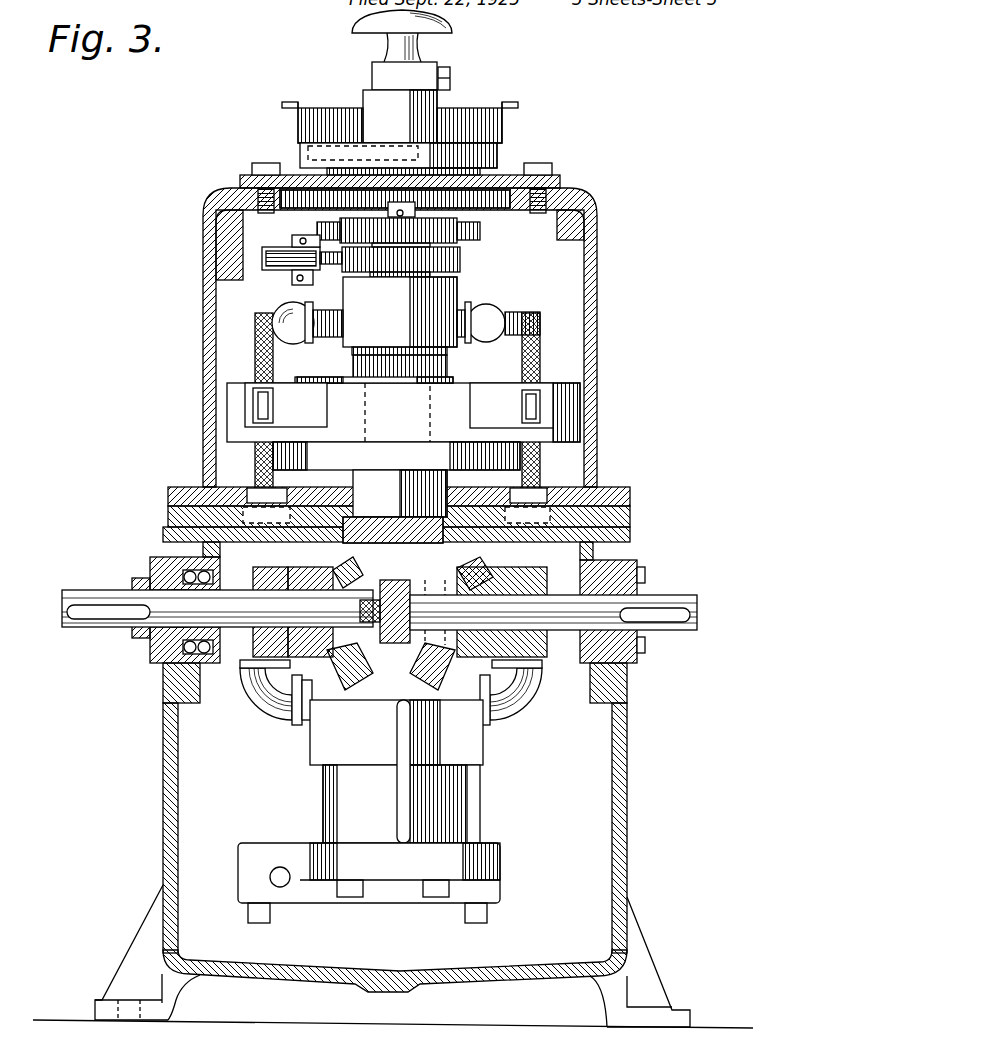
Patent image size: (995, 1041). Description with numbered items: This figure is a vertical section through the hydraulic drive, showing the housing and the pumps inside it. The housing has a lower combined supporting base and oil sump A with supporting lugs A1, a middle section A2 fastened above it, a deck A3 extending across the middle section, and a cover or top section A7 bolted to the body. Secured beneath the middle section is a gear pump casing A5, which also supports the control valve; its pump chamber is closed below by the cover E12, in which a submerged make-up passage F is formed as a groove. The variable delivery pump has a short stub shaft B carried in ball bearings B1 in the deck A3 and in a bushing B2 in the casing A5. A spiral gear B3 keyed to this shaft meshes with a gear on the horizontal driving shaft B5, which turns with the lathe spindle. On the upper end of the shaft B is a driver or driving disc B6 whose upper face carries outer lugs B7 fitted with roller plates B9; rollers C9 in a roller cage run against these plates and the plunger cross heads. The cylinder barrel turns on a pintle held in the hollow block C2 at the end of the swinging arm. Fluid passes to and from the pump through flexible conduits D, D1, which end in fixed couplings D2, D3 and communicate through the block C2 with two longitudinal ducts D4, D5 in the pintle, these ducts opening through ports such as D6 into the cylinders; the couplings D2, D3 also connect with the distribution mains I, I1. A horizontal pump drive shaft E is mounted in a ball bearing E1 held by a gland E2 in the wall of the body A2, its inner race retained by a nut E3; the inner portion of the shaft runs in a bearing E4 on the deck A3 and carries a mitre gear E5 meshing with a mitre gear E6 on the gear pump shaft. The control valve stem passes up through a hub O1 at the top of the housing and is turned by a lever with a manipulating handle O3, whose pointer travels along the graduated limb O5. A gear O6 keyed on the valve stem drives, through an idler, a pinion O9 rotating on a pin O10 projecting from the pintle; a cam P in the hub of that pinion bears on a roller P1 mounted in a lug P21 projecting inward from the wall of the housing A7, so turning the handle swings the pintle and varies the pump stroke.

The lower combined supporting base and oil sump A is at (500, 176).
The supporting lugs A1 is at (108, 1008).
The middle section A2 is at (200, 540).
The deck A3 is at (215, 533).
The gear pump casing A5 is at (328, 815).
The cover or top section A7 is at (207, 334).
The short stub shaft B is at (416, 589).
The ball bearings B1 is at (377, 531).
The bushing B2 is at (393, 645).
The spiral gear B3 is at (360, 594).
The horizontal driving shaft B5 is at (657, 604).
The driver or driving disc B6 is at (565, 441).
The outer lugs B7 is at (243, 415).
The roller paths or plates B9 is at (247, 395).
The hollow block C2 is at (400, 328).
The rollers C9 is at (275, 401).
The flexible conduit D is at (262, 458).
The flexible conduit D1 is at (545, 482).
The fixed coupling D2 is at (252, 497).
The fixed coupling D3 is at (550, 496).
The duct D4 is at (462, 306).
The duct D5 is at (288, 316).
The port D6 is at (362, 433).
The horizontal pump drive shaft E is at (83, 594).
The ball bearing E1 is at (163, 668).
The gland E2 is at (150, 649).
The nut E3 is at (150, 661).
The bearing E4 is at (250, 650).
The mitre gear E5 is at (265, 692).
The mitre gear E6 is at (317, 658).
The cover E12 is at (498, 870).
The supply or make up passage F is at (270, 882).
The distribution main I is at (258, 692).
The distribution main I1 is at (540, 714).
The hub O1 is at (327, 174).
The manipulating handle O3 is at (435, 32).
The graduated limb O5 is at (288, 102).
The gear O6 is at (306, 214).
The pinion O9 is at (442, 232).
The pin O10 is at (395, 202).
The cam P is at (462, 263).
The roller P1 is at (283, 250).
The abutment or lug P21 is at (262, 258).